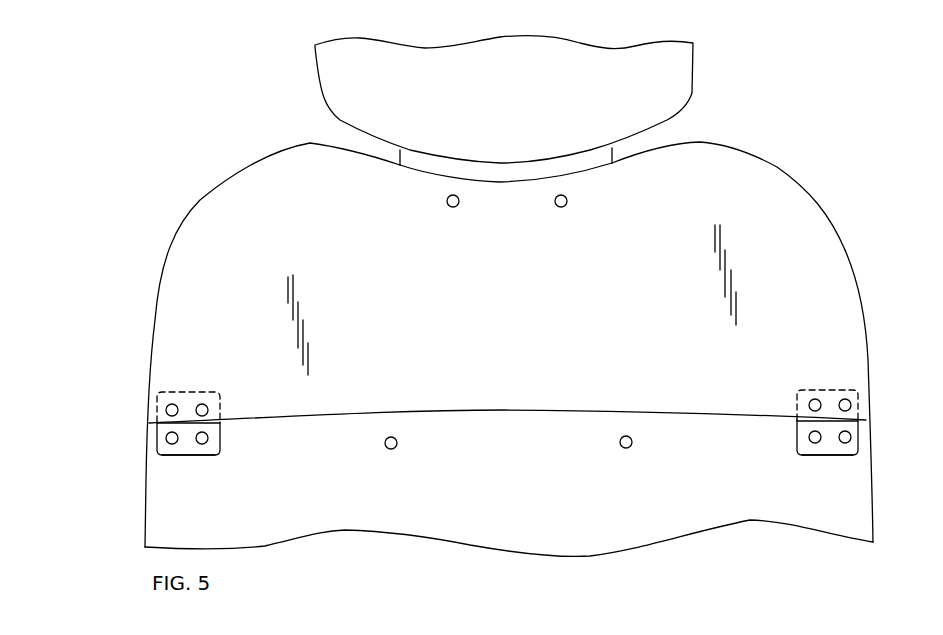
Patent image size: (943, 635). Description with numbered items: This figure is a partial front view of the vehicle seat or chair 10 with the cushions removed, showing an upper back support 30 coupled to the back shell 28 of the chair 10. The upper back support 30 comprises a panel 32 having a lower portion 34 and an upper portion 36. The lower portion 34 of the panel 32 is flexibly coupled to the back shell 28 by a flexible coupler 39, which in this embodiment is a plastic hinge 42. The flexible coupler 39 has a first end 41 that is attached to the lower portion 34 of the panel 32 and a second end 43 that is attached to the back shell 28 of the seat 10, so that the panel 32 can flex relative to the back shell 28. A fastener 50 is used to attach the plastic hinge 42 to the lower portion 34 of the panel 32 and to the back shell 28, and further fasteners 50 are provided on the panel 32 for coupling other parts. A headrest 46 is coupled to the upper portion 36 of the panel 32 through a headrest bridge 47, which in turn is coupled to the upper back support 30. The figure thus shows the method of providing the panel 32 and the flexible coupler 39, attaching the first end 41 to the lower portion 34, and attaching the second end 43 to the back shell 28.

The chair 10 is at (505, 356).
The back shell 28 is at (517, 545).
The upper back support 30 is at (203, 197).
The panel 32 is at (494, 332).
The lower portion 34 is at (874, 412).
The upper portion 36 is at (780, 165).
The flexible coupler 39 is at (220, 455).
The first end 41 is at (202, 386).
The plastic hinge 42 is at (157, 437).
The second end 43 is at (180, 458).
The headrest 46 is at (695, 72).
The headrest bridge 47 is at (612, 152).
The fastener 50 is at (452, 208).